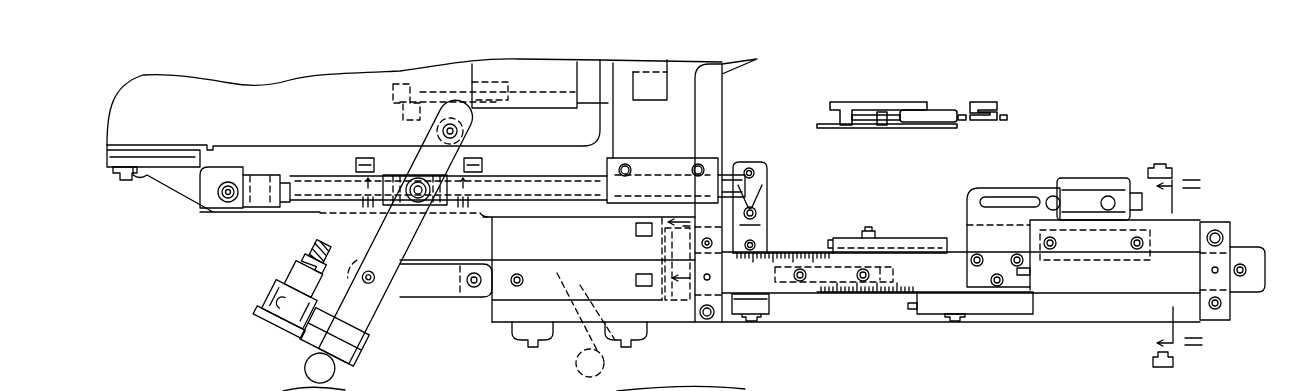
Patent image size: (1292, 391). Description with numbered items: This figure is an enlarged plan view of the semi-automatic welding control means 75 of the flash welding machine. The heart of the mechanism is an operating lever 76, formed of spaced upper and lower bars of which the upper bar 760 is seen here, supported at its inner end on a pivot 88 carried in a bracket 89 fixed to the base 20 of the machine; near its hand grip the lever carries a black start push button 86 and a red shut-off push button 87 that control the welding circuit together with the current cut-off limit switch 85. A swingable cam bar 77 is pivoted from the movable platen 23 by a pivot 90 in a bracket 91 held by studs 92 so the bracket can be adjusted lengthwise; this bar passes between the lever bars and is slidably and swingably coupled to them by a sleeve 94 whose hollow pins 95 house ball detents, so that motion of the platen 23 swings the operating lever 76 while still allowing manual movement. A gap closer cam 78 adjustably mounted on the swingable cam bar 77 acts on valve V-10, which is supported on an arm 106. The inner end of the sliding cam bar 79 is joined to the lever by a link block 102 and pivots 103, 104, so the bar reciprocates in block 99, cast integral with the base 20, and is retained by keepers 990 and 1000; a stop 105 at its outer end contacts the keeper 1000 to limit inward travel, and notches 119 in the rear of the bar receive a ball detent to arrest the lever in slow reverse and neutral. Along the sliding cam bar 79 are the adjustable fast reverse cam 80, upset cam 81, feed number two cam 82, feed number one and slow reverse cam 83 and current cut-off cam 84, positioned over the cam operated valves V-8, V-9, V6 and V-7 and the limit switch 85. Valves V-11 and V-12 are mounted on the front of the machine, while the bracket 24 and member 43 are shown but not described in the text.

The movable platen 23 is at (262, 90).
The base 20 is at (393, 86).
The bracket 24 is at (650, 98).
The bracket 89 is at (436, 126).
The pivot 88 is at (462, 128).
The hollow pins 95 is at (423, 175).
The studs 92 is at (128, 181).
The bracket 91 is at (187, 187).
The pivot 90 is at (222, 203).
The swingable cam bar 77 is at (543, 185).
The sleeve 94 is at (433, 208).
The gap closer cam 78 is at (652, 161).
The arm 106 is at (758, 162).
The valve V-10 is at (763, 187).
The control means 75 is at (786, 204).
The valve V-8 is at (845, 252).
The feed No. 2 cam 82 is at (882, 238).
The valve V-9 is at (867, 300).
The upset cam 81 is at (810, 295).
The fast reverse cam 80 is at (768, 316).
The keeper 990 is at (714, 322).
The valve V6 is at (911, 318).
The feed No. 1 and slow reverse cam 83 is at (988, 313).
The sliding cam bar 79 is at (1160, 290).
The current cut-off cam 84 is at (1040, 200).
The current cut-off limit switch 85 is at (1072, 178).
The valve V-7 is at (1030, 272).
The keeper 1000 is at (1208, 228).
The stop 105 is at (1242, 277).
The notches 119 is at (590, 258).
The block 99 is at (665, 245).
The valve V-11 is at (523, 338).
The valve V-12 is at (645, 327).
The pivot 104 is at (480, 272).
The pivot 103 is at (375, 272).
The upper bar 760 is at (374, 235).
The link block 102 is at (433, 298).
The operating lever 76 is at (305, 369).
The start push button 86 is at (280, 328).
The shut-off push button 87 is at (254, 318).
The member 43 is at (975, 390).